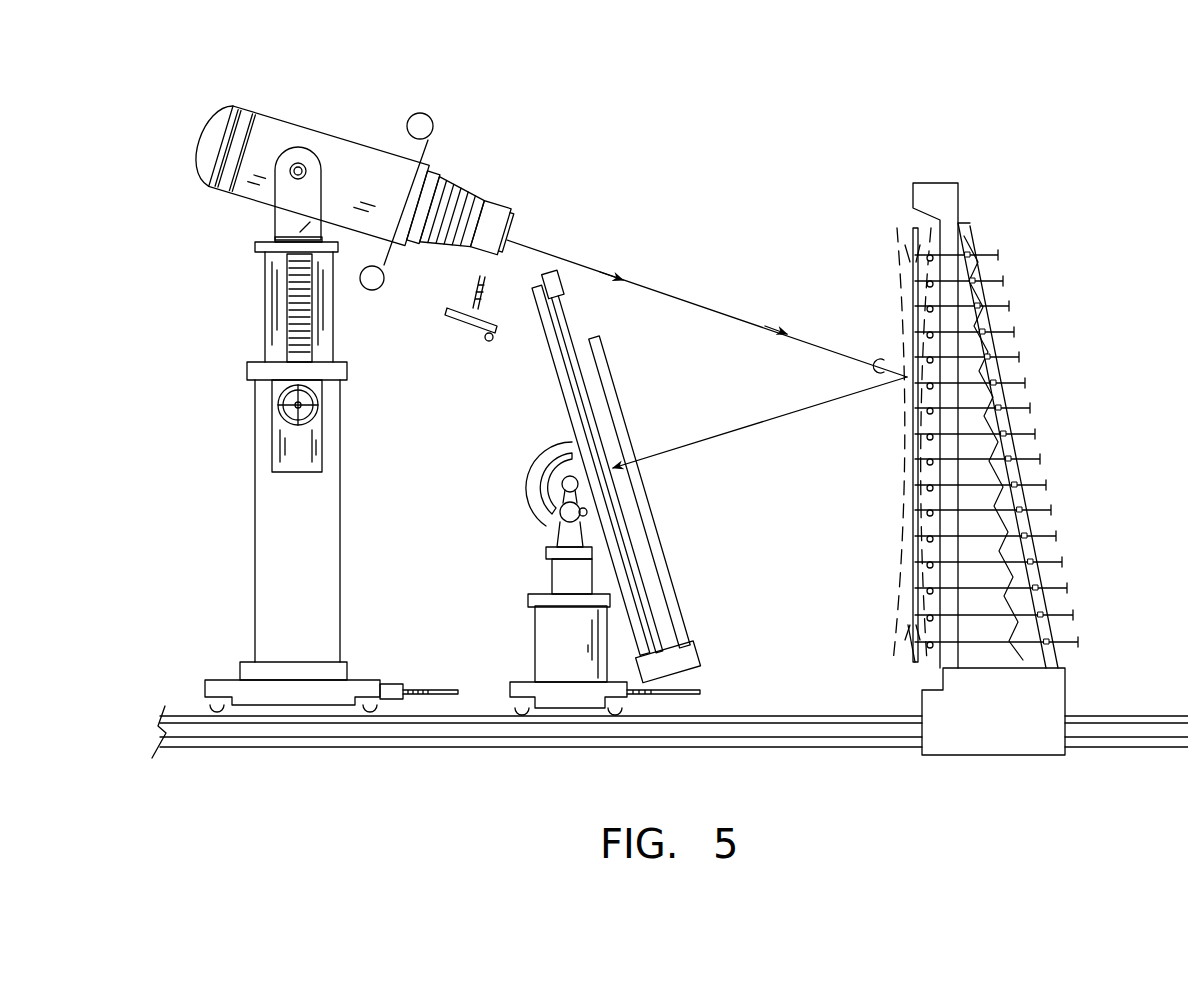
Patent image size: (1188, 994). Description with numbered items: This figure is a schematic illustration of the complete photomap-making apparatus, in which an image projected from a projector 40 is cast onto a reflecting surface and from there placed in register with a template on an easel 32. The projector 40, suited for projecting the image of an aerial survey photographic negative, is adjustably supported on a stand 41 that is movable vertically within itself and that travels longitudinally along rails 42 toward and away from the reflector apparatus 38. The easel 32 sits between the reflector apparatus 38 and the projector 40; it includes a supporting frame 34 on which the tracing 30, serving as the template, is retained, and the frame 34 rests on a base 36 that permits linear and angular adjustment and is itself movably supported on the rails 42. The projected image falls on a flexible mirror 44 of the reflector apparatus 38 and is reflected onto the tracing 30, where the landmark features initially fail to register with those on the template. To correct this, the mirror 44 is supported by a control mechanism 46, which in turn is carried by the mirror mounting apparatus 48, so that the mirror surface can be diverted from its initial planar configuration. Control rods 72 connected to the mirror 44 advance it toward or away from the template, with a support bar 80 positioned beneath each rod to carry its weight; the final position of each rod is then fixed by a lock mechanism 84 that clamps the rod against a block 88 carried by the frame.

The tracing 30 is at (562, 318).
The easel 32 is at (513, 423).
The supporting frame 34 is at (555, 378).
The base 36 is at (548, 582).
The reflector apparatus 38 is at (855, 232).
The projector 40 is at (328, 108).
The stand 41 is at (285, 520).
The rails 42 is at (190, 713).
The flexible mirror 44 is at (907, 630).
The control mechanism 46 is at (1060, 265).
The mirror mounting apparatus 48 is at (933, 168).
The control rods 72 is at (985, 255).
The support bar 80 is at (915, 265).
The lock mechanism 84 is at (1005, 320).
The block 88 is at (990, 340).